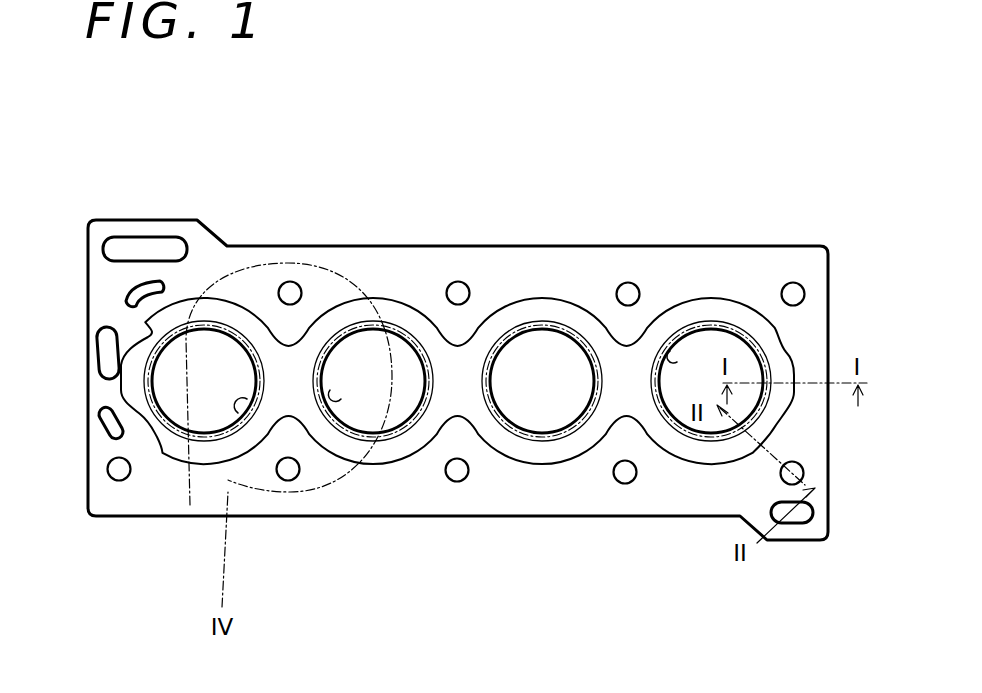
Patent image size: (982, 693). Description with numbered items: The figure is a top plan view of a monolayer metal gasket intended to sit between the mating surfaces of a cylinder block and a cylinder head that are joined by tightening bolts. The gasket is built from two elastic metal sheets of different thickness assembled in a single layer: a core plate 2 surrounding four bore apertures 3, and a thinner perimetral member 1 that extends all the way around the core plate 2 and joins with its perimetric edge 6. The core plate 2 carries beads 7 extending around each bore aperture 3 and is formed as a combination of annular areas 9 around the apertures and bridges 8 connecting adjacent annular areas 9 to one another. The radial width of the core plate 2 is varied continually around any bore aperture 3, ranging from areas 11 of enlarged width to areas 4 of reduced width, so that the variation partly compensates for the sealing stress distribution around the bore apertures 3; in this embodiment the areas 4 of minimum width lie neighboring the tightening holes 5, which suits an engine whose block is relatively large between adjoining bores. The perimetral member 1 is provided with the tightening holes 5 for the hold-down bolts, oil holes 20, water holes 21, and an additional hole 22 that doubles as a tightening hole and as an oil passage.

The perimetral member 1 is at (663, 483).
The core plate 2 is at (543, 455).
The bore aperture 3 is at (242, 405).
The area of reduced width 4 is at (250, 337).
The tightening hole 5 is at (290, 282).
The perimetric edge 6 is at (708, 298).
The bead 7 is at (538, 327).
The bridge 8 is at (287, 372).
The annular area 9 is at (387, 343).
The area of enlarged width 11 is at (223, 310).
The oil hole 20 is at (798, 520).
The water hole 21 is at (150, 248).
The additional hole 22 is at (132, 290).